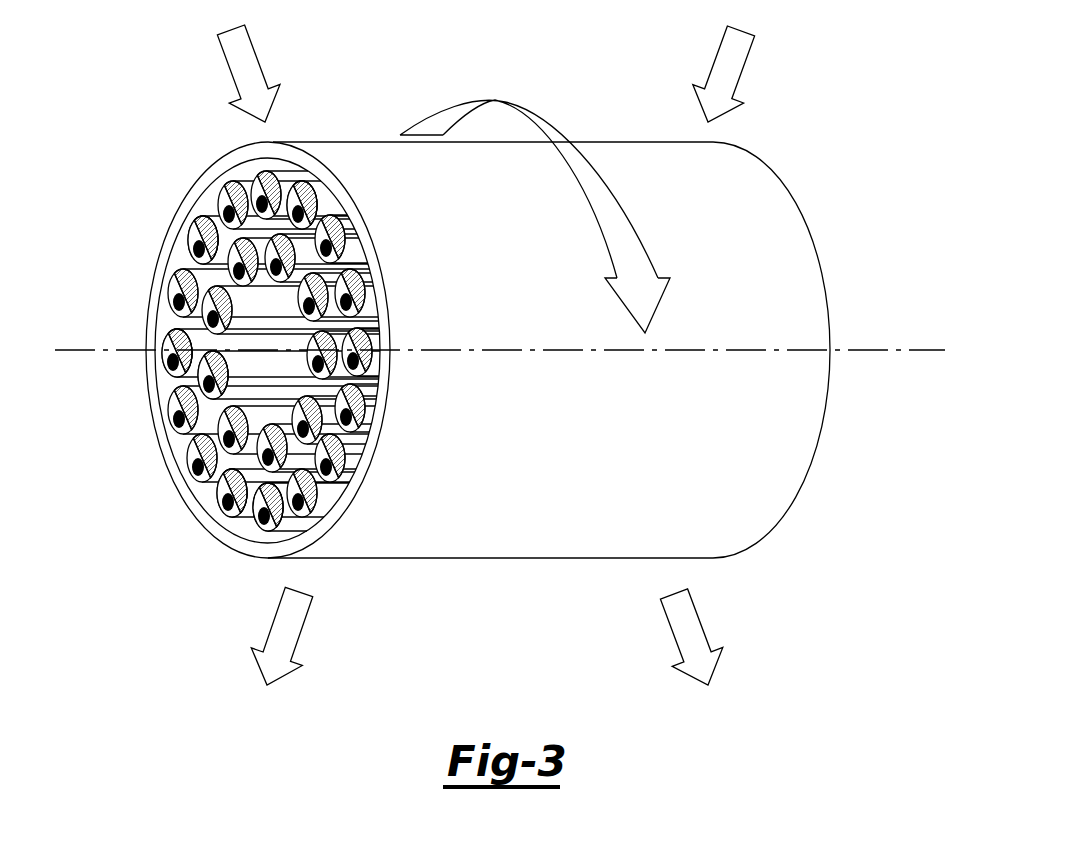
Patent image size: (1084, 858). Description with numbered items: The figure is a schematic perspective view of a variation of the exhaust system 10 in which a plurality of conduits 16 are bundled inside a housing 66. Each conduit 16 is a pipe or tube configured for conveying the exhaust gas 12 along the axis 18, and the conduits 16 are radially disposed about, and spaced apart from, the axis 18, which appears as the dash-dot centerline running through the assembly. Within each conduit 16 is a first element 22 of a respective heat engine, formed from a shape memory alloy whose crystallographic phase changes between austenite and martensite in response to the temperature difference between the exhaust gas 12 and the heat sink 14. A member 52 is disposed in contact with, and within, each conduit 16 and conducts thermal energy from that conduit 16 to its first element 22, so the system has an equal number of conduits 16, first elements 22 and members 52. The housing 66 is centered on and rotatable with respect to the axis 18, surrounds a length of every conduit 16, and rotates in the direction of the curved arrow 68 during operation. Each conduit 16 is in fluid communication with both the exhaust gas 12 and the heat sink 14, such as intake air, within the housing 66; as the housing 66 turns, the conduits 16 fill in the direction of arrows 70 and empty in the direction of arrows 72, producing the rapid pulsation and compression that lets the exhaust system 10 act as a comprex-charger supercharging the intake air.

The exhaust system 10 is at (105, 110).
The exhaust gas 12 is at (200, 158).
The heat sink 14 is at (564, 306).
The conduit 16 is at (172, 285).
The axis 18 is at (925, 349).
The first element 22 is at (192, 250).
The member 52 is at (306, 192).
The housing 66 is at (387, 140).
The arrow 68 is at (553, 101).
The arrows 70 is at (227, 70).
The arrows 72 is at (275, 618).